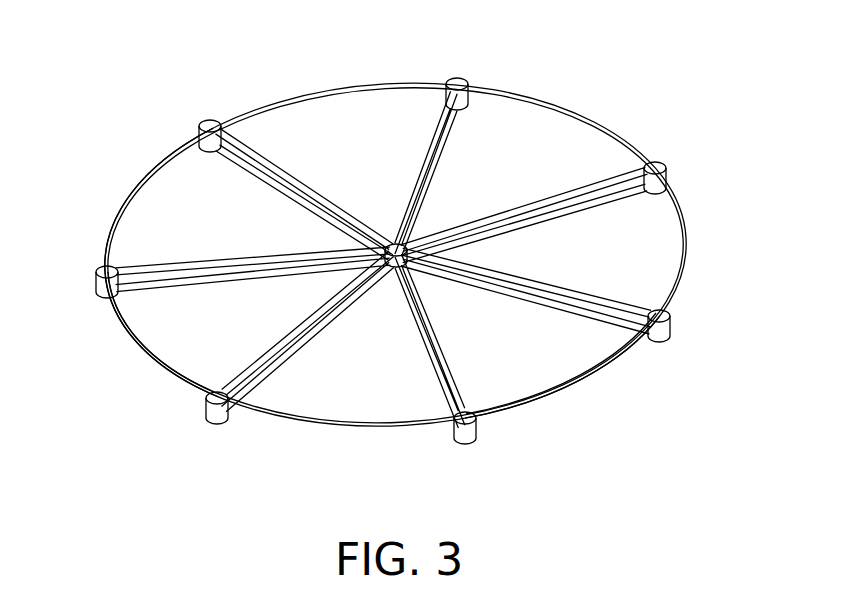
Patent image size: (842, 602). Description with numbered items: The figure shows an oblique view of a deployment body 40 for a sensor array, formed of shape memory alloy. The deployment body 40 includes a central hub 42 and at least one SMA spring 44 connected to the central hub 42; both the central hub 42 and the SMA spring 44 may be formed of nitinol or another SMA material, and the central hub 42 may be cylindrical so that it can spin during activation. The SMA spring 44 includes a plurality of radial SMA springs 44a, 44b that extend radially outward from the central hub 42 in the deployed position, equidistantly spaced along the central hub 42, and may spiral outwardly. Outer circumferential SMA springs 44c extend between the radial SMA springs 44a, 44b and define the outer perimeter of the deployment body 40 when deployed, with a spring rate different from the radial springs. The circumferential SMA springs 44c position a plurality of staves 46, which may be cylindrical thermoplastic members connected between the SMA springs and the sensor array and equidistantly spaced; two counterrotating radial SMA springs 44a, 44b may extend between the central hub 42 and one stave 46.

The deployment body 40 is at (247, 95).
The central hub 42 is at (470, 222).
The SMA spring 44 is at (434, 128).
The radial SMA spring 44a is at (141, 258).
The radial SMA spring 44b is at (160, 276).
The circumferential SMA spring 44c is at (565, 384).
The stave 46 is at (466, 440).